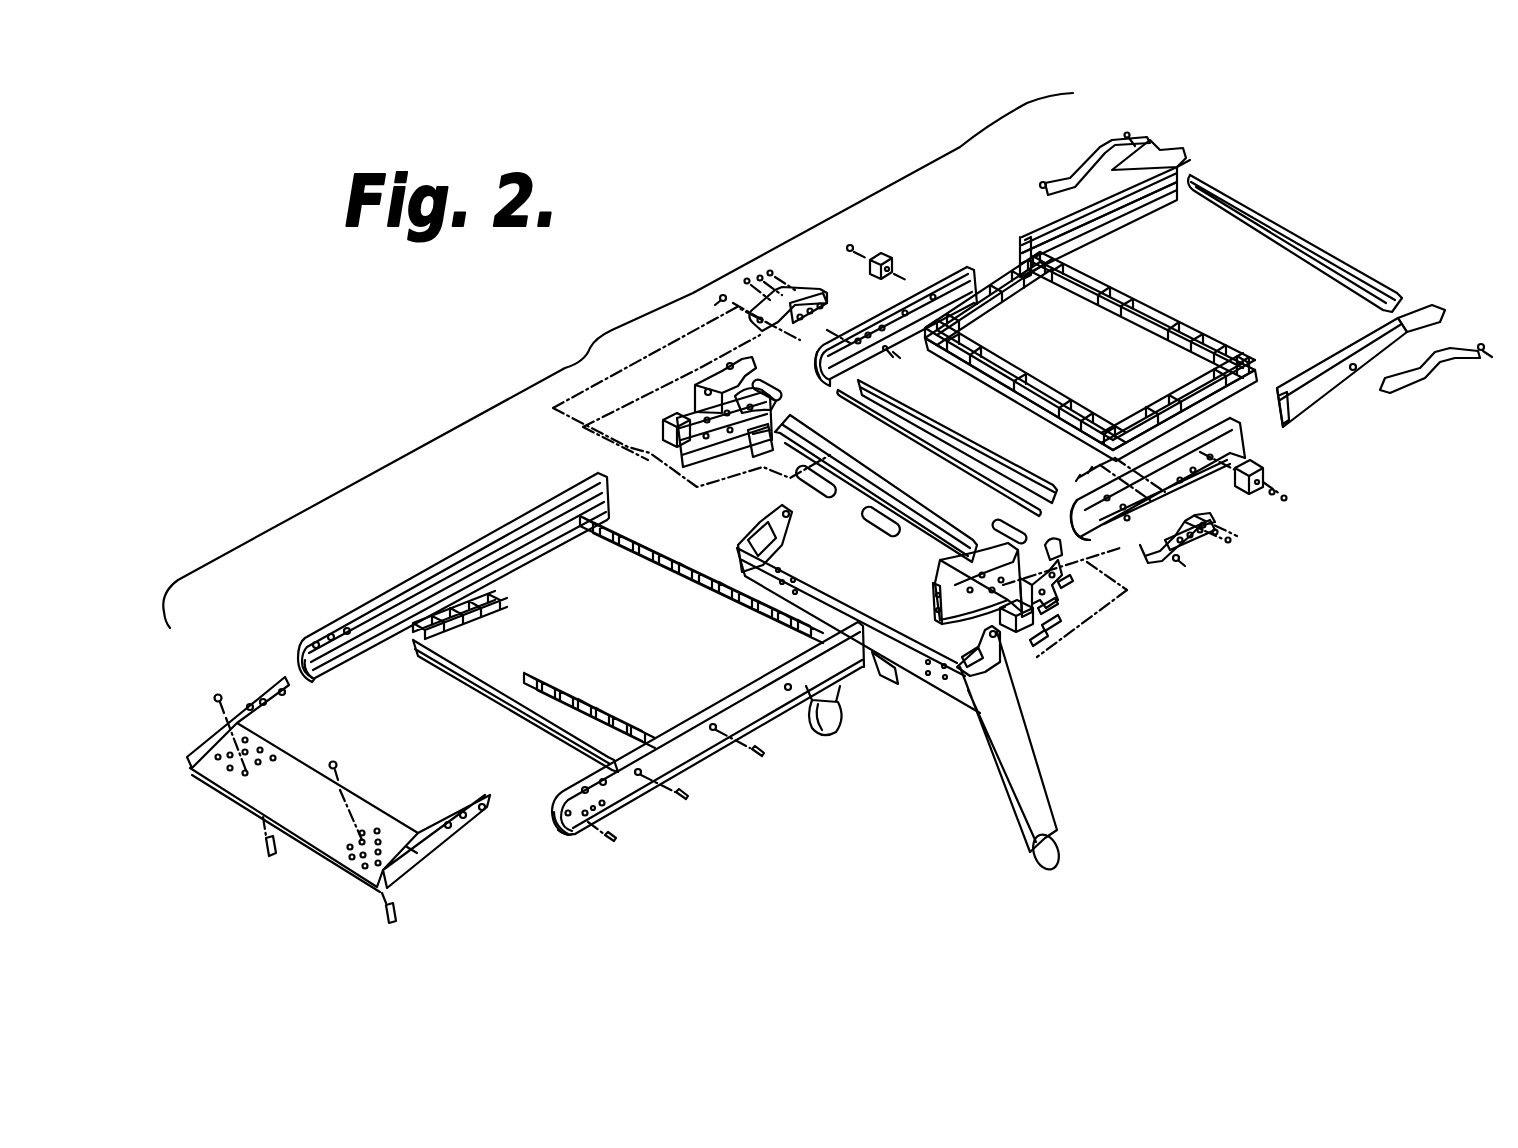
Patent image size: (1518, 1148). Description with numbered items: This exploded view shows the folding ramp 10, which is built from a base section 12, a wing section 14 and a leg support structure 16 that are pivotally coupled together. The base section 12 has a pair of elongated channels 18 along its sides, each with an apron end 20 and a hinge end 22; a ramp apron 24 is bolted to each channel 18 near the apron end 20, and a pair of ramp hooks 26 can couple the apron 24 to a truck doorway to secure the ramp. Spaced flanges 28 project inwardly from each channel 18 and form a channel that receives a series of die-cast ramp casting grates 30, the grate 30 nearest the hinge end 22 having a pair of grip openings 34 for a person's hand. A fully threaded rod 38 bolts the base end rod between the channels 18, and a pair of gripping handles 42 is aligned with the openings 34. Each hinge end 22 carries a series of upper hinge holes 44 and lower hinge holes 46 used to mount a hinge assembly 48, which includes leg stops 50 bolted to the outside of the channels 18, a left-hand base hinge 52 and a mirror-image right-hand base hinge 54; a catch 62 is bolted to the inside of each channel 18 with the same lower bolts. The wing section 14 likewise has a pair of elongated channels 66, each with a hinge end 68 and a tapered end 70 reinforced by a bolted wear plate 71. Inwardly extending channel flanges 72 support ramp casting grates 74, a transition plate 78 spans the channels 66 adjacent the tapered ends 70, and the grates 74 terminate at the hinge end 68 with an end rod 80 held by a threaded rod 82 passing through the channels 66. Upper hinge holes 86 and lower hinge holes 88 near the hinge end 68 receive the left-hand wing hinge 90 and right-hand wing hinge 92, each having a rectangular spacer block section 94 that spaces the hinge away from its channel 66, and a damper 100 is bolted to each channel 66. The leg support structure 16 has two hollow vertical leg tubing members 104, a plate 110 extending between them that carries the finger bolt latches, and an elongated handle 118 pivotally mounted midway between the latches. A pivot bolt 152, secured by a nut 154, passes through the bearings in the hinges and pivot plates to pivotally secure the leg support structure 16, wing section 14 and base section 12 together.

The folding ramp 10 is at (590, 340).
The base section 12 is at (448, 545).
The wing section 14 is at (960, 254).
The leg support structure 16 is at (1052, 790).
The elongated channels 18 is at (392, 602).
The apron end 20 is at (560, 830).
The hinge end 22 is at (772, 400).
The ramp apron 24 is at (400, 867).
The ramp hooks 26 is at (220, 694).
The spaced flanges 28 is at (332, 660).
The ramp casting grates 30 is at (472, 676).
The grip openings 34 is at (683, 556).
The threaded rod 38 is at (847, 452).
The gripping handles 42 is at (838, 492).
The upper hinge holes 44 is at (935, 605).
The lower hinge holes 46 is at (972, 614).
The hinge assembly 48 is at (1139, 606).
The leg stops 50 is at (666, 420).
The left-hand base hinge 52 is at (695, 386).
The right-hand base hinge 54 is at (1052, 590).
The catch 62 is at (760, 455).
The elongated channels 66 is at (1038, 234).
The hinge end 68 is at (820, 364).
The tapered end 70 is at (1160, 170).
The wear plate 71 is at (1093, 157).
The channel flanges 72 is at (1160, 192).
The ramp casting grates 74 is at (1155, 318).
The transition plate 78 is at (1330, 252).
The end rod 80 is at (933, 420).
The threaded rod 82 is at (940, 456).
The upper hinge holes 86 is at (1180, 490).
The lower hinge holes 88 is at (1064, 550).
The left-hand wing hinge 90 is at (804, 288).
The right-hand wing hinge 92 is at (1232, 537).
The spacer block section 94 is at (826, 299).
The damper 100 is at (893, 257).
The leg tubing members 104 is at (1005, 812).
The plate 110 is at (852, 606).
The handle 118 is at (880, 688).
The pivot bolt 152 is at (780, 384).
The nut 154 is at (714, 305).